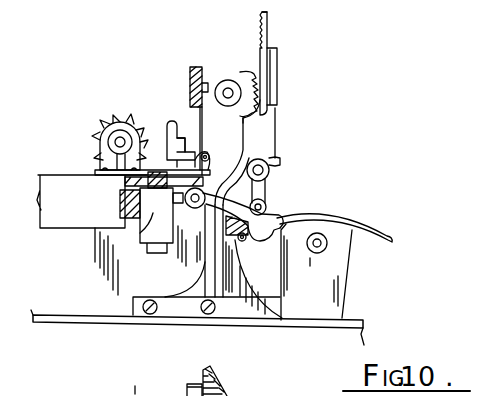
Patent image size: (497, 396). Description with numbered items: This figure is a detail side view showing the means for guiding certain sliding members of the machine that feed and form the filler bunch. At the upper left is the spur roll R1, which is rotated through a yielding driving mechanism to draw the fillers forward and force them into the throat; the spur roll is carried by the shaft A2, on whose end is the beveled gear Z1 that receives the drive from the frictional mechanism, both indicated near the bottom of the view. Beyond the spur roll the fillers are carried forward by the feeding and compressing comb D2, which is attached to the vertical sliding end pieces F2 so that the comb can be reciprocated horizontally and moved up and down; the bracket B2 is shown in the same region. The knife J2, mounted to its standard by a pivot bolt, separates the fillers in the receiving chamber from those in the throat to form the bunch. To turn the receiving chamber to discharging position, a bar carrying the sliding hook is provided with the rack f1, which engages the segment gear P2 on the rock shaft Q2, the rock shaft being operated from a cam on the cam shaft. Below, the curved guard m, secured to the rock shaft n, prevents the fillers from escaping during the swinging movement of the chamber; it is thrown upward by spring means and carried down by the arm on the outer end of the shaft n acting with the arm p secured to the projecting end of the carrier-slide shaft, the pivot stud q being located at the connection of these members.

The spur roll R1 is at (112, 118).
The bracket B2 is at (162, 157).
The feeding and compressing comb D2 is at (183, 147).
The segment gear P2 is at (247, 75).
The rock shaft Q2 is at (228, 80).
The rack f1 is at (282, 15).
The knife J2 is at (202, 123).
The vertical sliding end piece F2 is at (158, 178).
The rock shaft n is at (190, 206).
The pivot stud q is at (268, 167).
The arm p is at (263, 184).
The curved guard m is at (218, 202).
The shaft A2 is at (124, 376).
The beveled gear Z1 is at (228, 395).